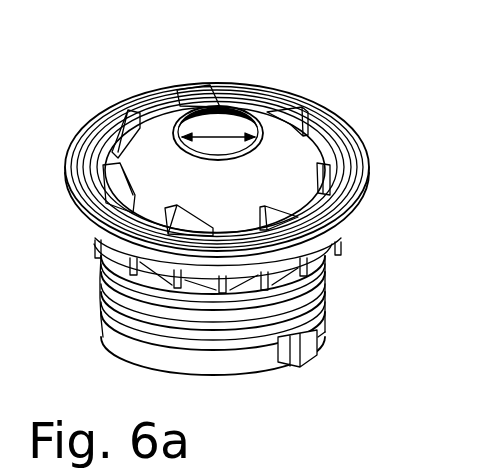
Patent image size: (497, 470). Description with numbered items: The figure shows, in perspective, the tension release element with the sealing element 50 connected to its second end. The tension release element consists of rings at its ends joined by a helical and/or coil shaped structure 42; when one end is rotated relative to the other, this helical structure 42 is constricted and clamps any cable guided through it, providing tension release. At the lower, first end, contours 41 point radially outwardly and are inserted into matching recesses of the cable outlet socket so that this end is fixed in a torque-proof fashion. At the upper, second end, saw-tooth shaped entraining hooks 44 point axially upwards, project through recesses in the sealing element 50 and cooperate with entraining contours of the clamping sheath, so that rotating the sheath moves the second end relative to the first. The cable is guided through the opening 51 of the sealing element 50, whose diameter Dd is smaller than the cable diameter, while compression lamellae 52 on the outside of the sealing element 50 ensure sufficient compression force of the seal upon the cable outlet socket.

The contours 41 is at (307, 347).
The helical and/or coil shaped structure 42 is at (327, 288).
The entraining hooks 44 is at (118, 125).
The sealing element 50 is at (283, 157).
The opening 51 is at (238, 103).
The compression lamellae 52 is at (348, 196).
The diameter of the opening Dd is at (200, 127).